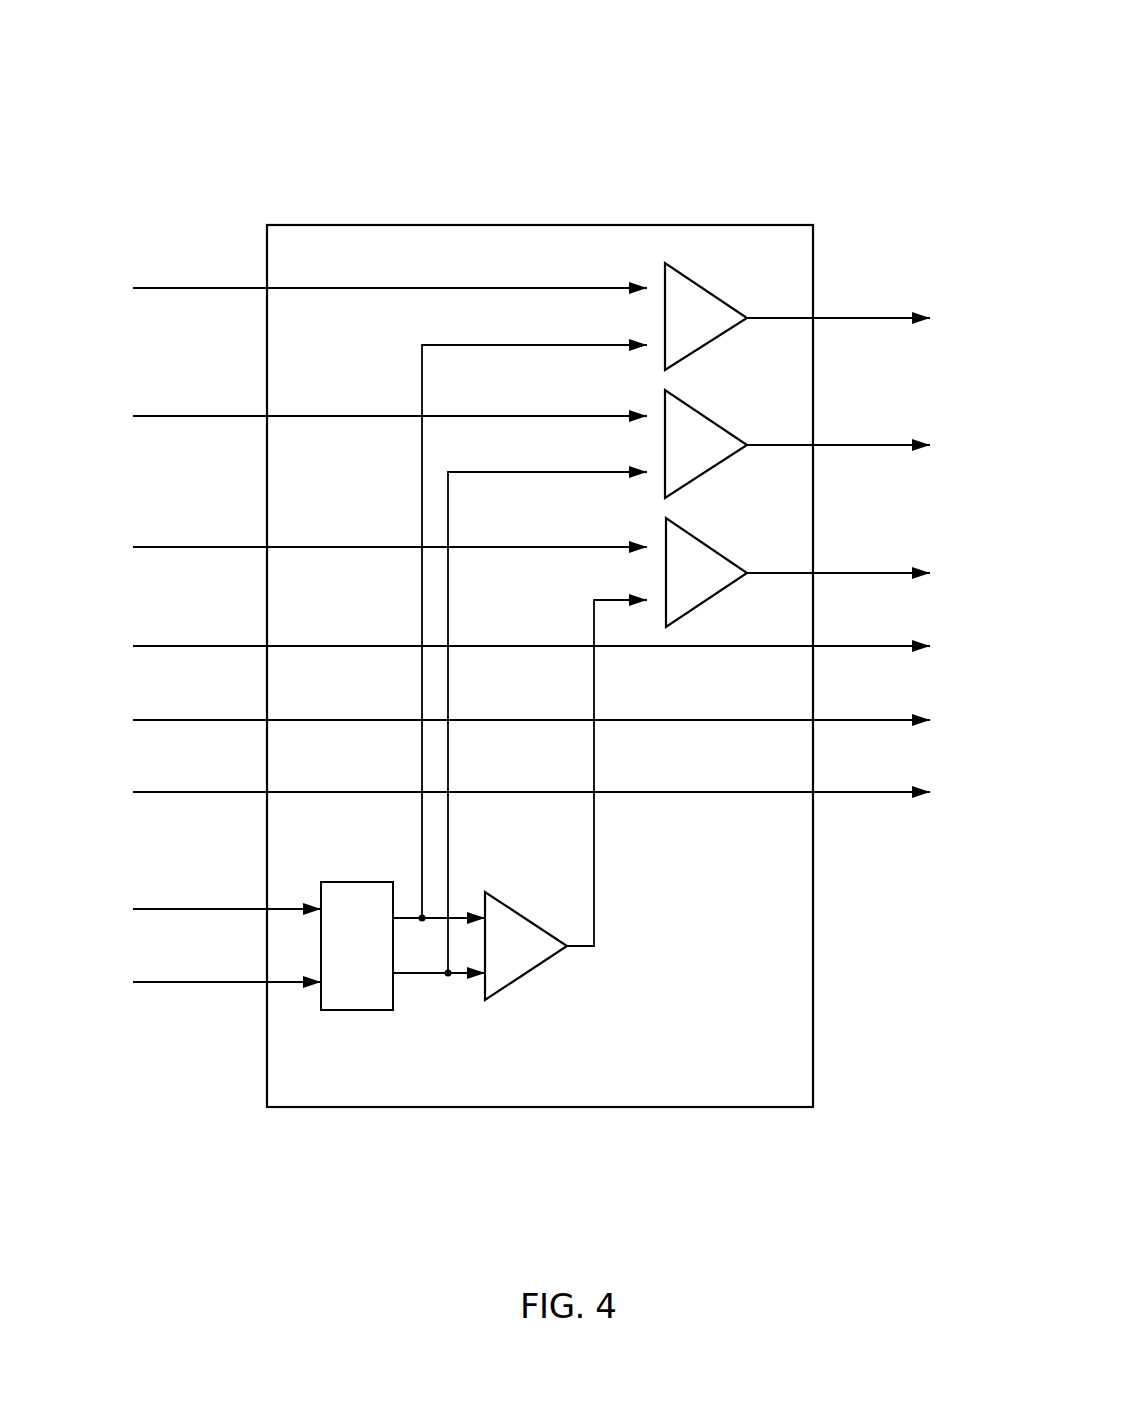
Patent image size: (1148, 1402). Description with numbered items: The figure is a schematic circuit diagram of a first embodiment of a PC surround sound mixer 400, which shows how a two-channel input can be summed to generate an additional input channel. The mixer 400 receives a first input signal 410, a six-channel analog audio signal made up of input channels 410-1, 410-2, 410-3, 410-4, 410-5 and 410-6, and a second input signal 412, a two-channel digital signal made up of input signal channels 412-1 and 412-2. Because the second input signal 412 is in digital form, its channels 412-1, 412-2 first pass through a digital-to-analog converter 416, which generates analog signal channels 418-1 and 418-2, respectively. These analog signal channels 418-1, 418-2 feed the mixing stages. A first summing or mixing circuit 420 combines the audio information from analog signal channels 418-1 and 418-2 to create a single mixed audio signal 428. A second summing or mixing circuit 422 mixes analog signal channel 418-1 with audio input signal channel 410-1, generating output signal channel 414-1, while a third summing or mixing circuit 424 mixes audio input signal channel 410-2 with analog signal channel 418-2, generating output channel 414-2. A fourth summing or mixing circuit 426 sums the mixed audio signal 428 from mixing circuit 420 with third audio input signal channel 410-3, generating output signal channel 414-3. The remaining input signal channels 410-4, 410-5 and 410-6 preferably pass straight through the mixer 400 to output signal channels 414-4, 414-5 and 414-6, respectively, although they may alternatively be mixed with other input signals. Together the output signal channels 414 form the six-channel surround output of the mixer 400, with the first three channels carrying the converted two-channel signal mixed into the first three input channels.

The PC surround sound mixer 400 is at (770, 128).
The first input signal 410 is at (182, 188).
The audio input signal channel 410-1 is at (203, 287).
The audio input signal channel 410-2 is at (203, 415).
The third audio input signal channel 410-3 is at (203, 543).
The input signal channel 410-4 is at (203, 643).
The input signal channel 410-5 is at (203, 717).
The input signal channel 410-6 is at (203, 791).
The second input signal 412 is at (200, 1078).
The input signal channel 412-1 is at (202, 907).
The input signal channel 412-2 is at (194, 985).
The output signal channels 414 is at (884, 896).
The output signal channel 414-1 is at (871, 317).
The output channel 414-2 is at (871, 444).
The output signal channel 414-3 is at (871, 572).
The output signal channel 414-4 is at (871, 645).
The output signal channel 414-5 is at (871, 719).
The output signal channel 414-6 is at (871, 791).
The digital-to-analog converter 416 is at (340, 1000).
The analog signal channel 418-1 is at (420, 745).
The analog signal channel 418-2 is at (450, 773).
The summing or mixing circuit 420 is at (500, 979).
The summing or mixing circuit 422 is at (695, 287).
The summing or mixing circuit 424 is at (695, 417).
The summing or mixing circuit 426 is at (697, 543).
The mixed audio signal 428 is at (596, 897).